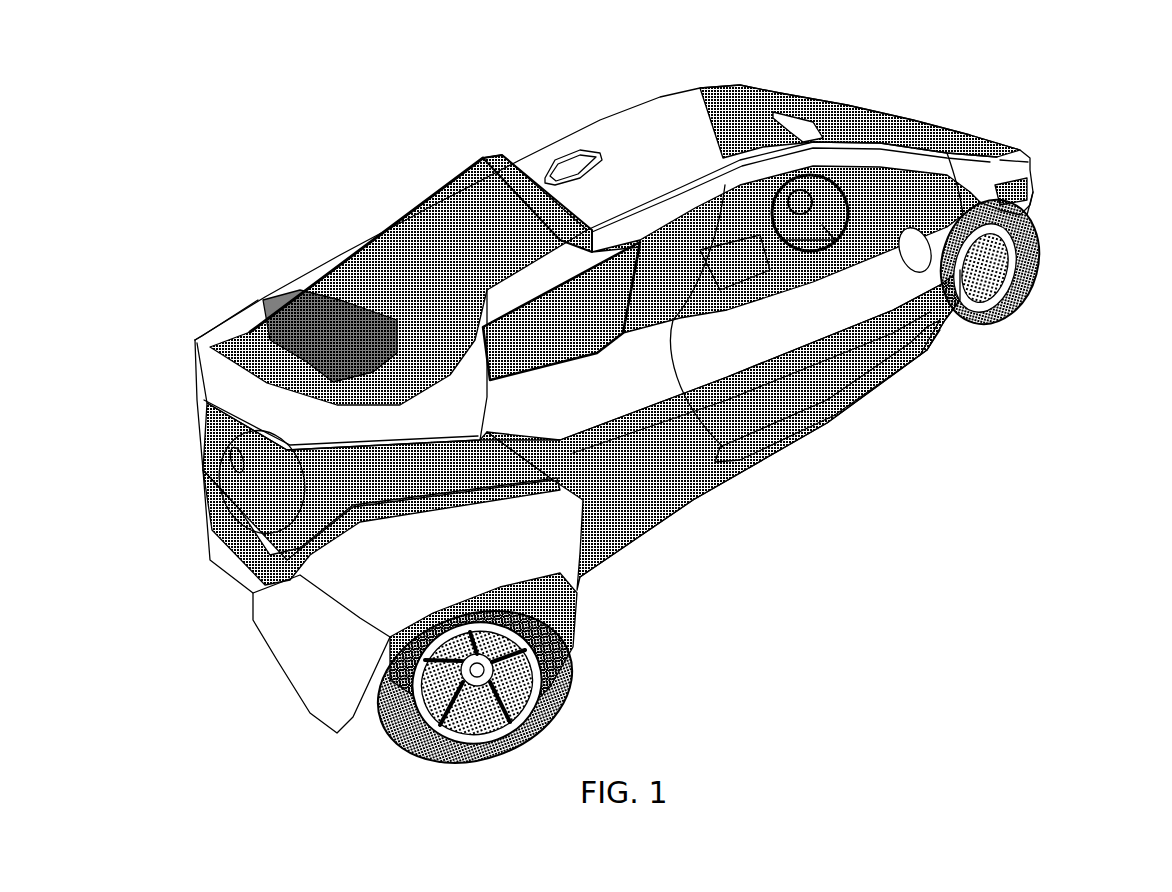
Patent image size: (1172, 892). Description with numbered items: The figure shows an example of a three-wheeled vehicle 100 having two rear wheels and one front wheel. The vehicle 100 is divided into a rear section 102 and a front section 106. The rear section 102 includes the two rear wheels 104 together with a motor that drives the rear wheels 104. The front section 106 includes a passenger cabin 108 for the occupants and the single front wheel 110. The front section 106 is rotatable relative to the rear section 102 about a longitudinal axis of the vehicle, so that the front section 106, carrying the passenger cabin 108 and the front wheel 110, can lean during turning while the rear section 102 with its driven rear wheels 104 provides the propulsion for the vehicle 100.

The three-wheeled vehicle 100 is at (660, 417).
The rear section 102 is at (660, 389).
The rear wheels 104 is at (555, 650).
The front section 106 is at (1025, 358).
The passenger cabin 108 is at (752, 216).
The front wheel 110 is at (1036, 238).